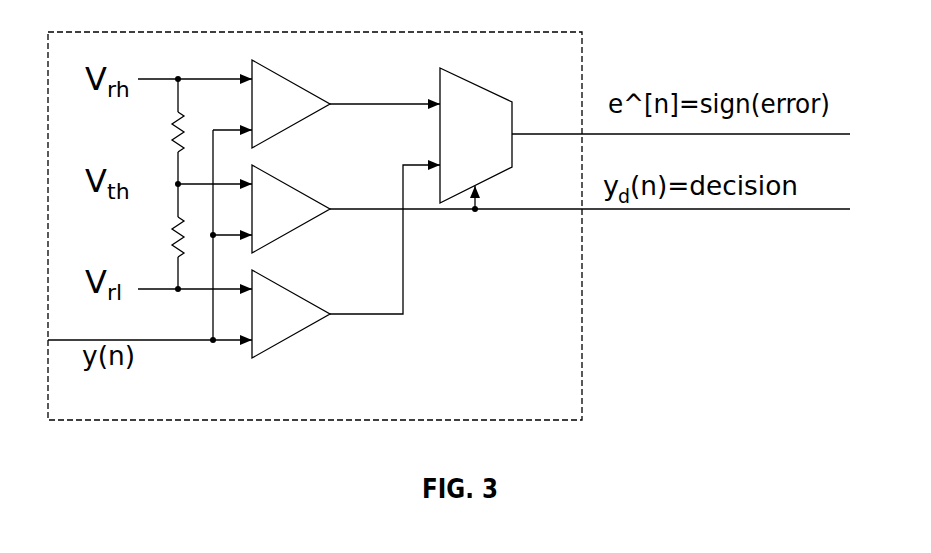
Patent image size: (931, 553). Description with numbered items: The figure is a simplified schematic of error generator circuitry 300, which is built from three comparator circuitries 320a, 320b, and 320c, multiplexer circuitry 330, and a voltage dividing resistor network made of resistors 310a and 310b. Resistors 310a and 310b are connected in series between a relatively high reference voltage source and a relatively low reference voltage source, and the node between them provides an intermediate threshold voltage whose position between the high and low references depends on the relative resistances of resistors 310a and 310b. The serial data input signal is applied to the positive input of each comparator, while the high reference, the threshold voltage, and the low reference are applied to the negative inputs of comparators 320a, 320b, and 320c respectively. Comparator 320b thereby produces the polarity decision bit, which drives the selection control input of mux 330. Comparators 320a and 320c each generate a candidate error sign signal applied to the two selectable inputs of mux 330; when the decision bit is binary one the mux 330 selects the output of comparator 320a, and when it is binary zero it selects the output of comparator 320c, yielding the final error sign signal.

The error generator circuitry 300 is at (113, 31).
The resistor 310a is at (171, 134).
The resistor 310b is at (171, 239).
The comparator circuitry 320a is at (291, 82).
The comparator circuitry 320b is at (291, 186).
The comparator circuitry 320c is at (291, 291).
The multiplexer circuitry 330 is at (477, 80).